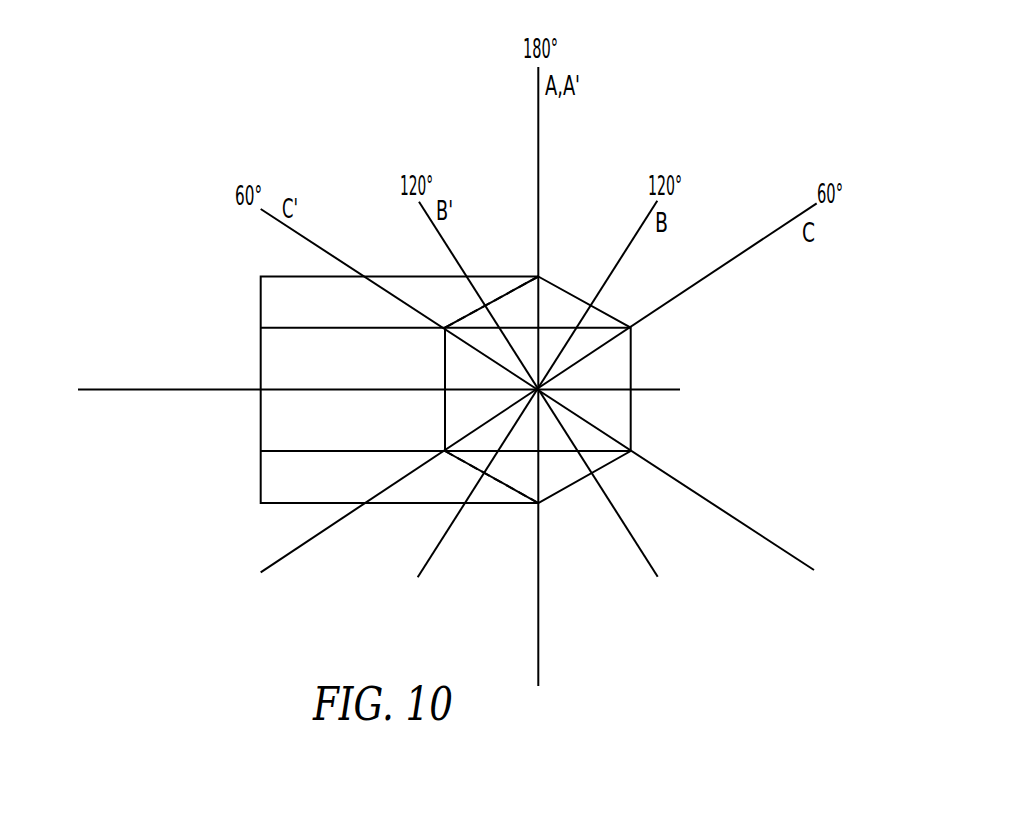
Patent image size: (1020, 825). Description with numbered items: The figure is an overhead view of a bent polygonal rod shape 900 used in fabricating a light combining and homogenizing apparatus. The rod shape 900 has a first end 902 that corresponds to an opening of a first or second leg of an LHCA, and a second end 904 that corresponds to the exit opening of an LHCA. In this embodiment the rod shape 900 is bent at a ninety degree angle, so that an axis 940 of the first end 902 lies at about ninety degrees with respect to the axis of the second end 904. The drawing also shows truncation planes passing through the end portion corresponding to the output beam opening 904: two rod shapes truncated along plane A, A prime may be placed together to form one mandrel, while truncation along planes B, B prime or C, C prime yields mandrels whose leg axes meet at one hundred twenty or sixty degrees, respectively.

The bent rod shape 900 is at (266, 276).
The first end 902 is at (261, 451).
The second end 904 is at (444, 364).
The axis 940 is at (101, 389).